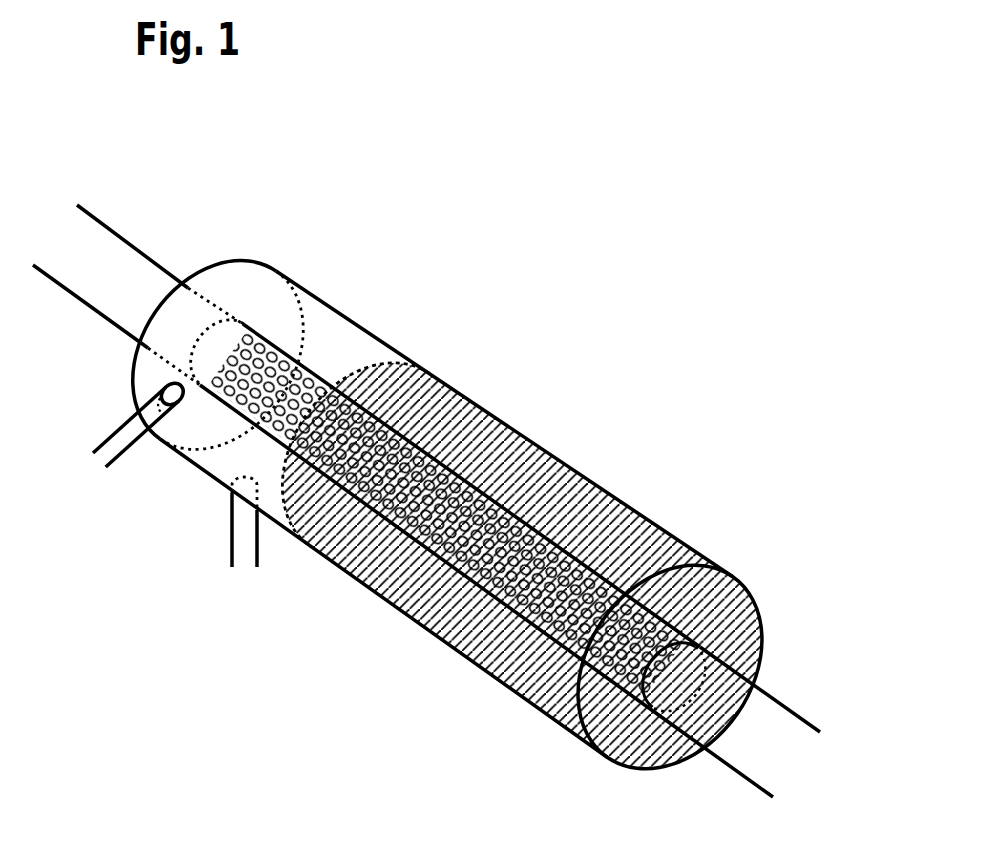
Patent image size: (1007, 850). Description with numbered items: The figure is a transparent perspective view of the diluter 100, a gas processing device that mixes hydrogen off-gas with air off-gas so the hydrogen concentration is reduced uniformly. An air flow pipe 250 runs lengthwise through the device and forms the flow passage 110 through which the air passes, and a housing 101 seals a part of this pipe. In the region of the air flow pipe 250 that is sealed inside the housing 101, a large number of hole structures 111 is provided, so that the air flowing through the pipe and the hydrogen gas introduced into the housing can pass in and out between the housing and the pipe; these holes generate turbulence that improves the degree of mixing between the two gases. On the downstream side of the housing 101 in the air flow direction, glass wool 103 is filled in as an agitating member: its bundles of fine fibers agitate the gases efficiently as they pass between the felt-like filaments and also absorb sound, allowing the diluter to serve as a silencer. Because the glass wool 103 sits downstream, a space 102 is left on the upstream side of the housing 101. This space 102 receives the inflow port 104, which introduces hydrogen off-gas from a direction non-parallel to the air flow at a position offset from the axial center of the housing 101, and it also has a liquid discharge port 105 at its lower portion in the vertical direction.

The diluter 100 is at (217, 739).
The housing 101 is at (273, 262).
The space 102 is at (330, 333).
The glass wool 103 is at (480, 432).
The inflow port 104 is at (110, 437).
The liquid discharge port 105 is at (257, 550).
The flow passage 110 is at (783, 707).
The hole structures 111 is at (588, 483).
The air flow pipe 250 is at (145, 253).